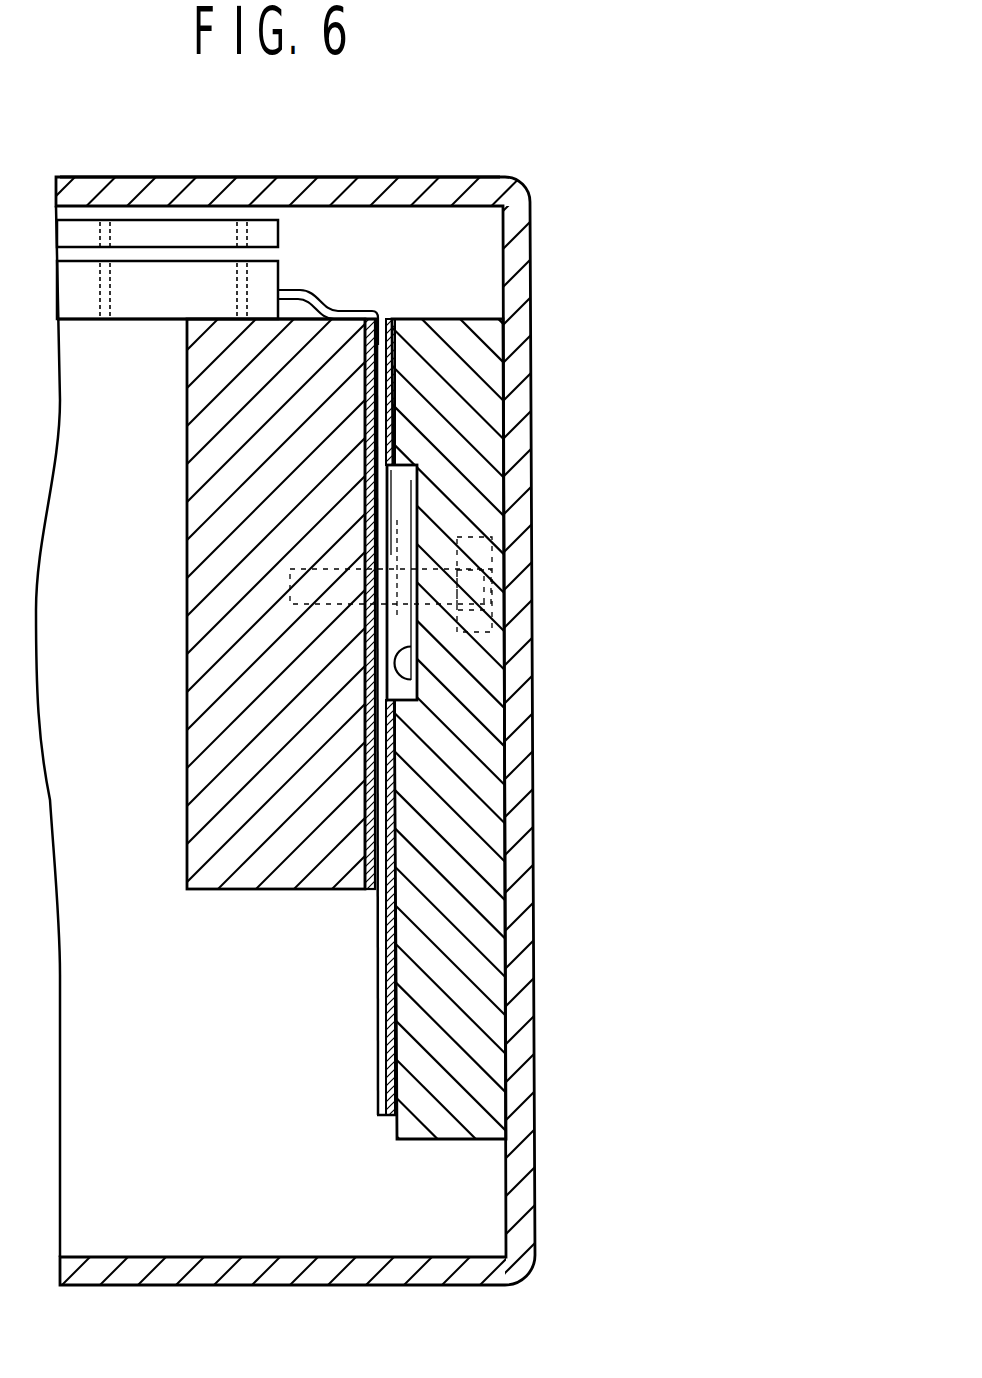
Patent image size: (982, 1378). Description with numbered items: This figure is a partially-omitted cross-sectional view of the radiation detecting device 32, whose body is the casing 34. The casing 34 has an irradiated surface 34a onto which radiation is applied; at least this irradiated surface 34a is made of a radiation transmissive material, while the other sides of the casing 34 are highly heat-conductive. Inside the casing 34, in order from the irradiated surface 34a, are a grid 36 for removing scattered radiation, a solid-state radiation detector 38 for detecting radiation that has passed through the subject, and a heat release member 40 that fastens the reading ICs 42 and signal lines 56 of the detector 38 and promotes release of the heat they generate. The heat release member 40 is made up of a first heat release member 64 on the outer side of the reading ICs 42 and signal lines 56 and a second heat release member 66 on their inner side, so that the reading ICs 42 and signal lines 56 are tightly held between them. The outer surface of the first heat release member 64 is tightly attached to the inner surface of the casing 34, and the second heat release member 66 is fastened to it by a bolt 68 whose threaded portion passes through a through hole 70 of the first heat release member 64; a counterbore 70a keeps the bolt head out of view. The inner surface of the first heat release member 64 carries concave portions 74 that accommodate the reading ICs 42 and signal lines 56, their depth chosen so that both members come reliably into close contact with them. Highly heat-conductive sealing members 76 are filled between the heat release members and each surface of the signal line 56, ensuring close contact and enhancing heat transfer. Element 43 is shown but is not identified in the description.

The radiation detecting device 32 is at (525, 34).
The casing 34 is at (522, 1143).
The irradiated surface 34a is at (358, 178).
The grid 36 is at (143, 237).
The solid-state radiation detector 38 is at (372, 287).
The heat release member 40 is at (182, 803).
The reading IC 42 is at (403, 487).
The lower plate 43 is at (123, 293).
The signal line 56 is at (323, 290).
The first heat release member 64 is at (452, 790).
The second heat release member 66 is at (228, 600).
The bolt 68 is at (497, 606).
The through hole 70 is at (492, 573).
The counterbore 70a is at (495, 546).
The concave portion 74 is at (417, 686).
The sealing member 76 is at (372, 890).